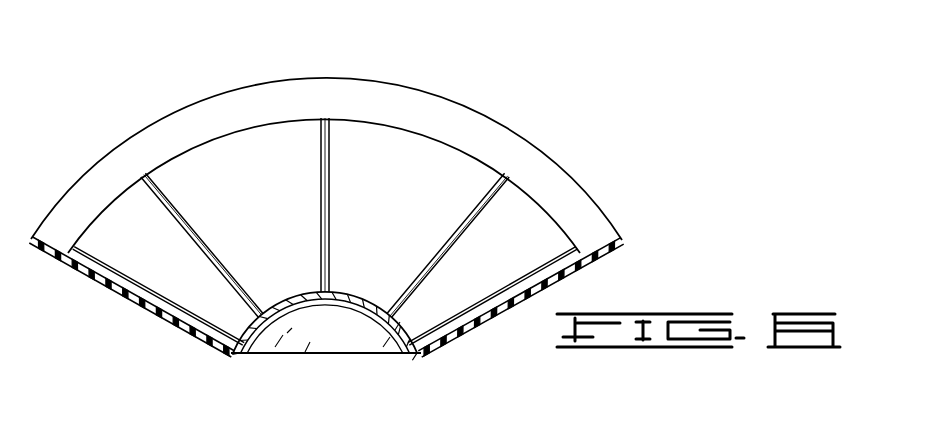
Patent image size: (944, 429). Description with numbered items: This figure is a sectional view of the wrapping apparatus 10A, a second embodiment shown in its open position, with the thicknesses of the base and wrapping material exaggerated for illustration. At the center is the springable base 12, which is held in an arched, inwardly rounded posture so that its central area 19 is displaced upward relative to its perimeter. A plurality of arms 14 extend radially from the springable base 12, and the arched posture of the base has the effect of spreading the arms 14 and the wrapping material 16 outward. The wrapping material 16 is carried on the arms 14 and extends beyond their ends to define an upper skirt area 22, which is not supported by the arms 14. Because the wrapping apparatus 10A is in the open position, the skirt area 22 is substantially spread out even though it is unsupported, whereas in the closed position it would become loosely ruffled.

The wrapping apparatus 10A is at (172, 76).
The springable base 12 is at (337, 333).
The arms 14 is at (173, 205).
The wrapping material 16 is at (267, 157).
The central area 19 is at (345, 300).
The upper skirt area 22 is at (541, 167).